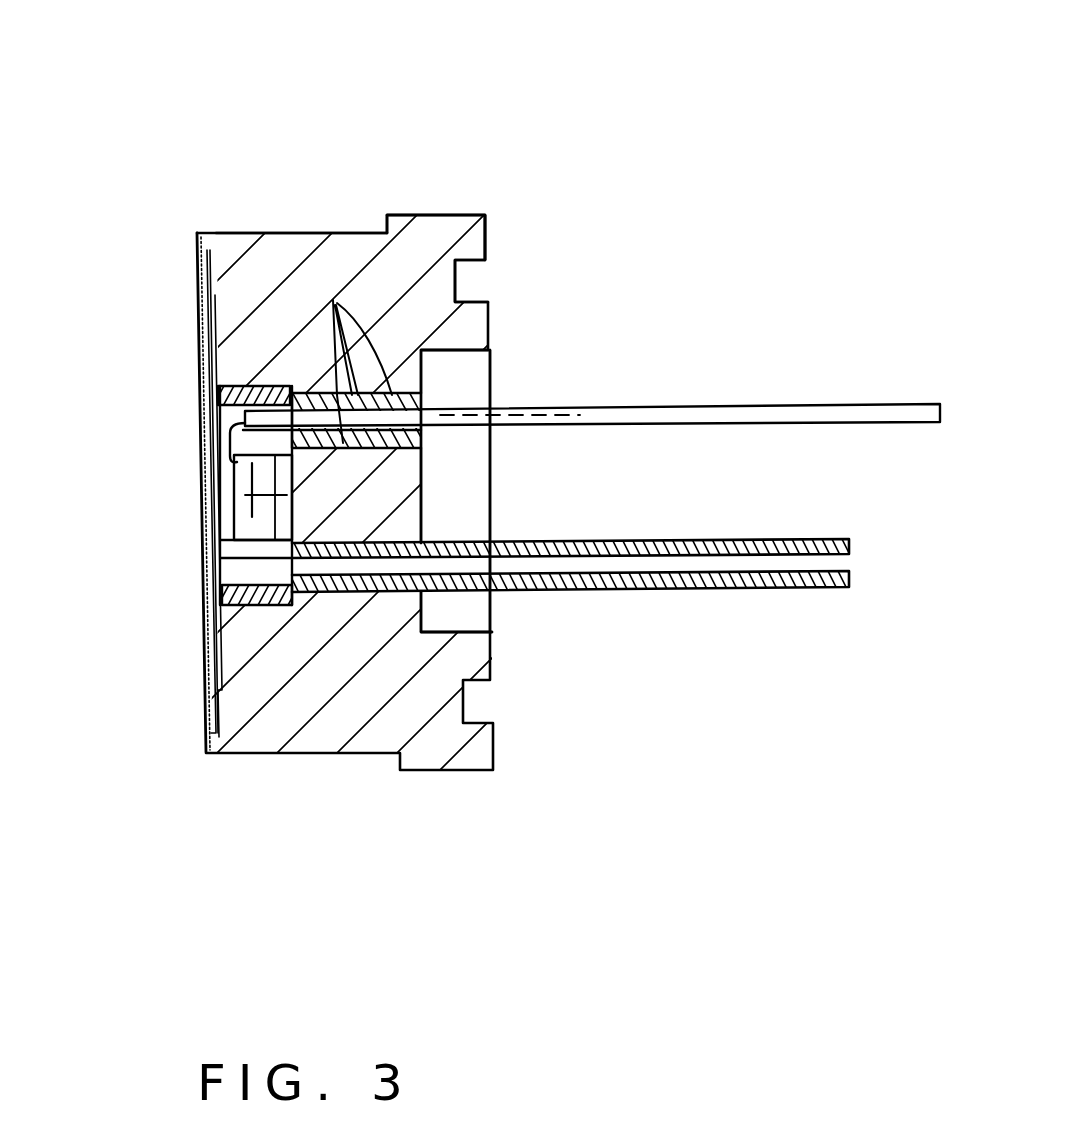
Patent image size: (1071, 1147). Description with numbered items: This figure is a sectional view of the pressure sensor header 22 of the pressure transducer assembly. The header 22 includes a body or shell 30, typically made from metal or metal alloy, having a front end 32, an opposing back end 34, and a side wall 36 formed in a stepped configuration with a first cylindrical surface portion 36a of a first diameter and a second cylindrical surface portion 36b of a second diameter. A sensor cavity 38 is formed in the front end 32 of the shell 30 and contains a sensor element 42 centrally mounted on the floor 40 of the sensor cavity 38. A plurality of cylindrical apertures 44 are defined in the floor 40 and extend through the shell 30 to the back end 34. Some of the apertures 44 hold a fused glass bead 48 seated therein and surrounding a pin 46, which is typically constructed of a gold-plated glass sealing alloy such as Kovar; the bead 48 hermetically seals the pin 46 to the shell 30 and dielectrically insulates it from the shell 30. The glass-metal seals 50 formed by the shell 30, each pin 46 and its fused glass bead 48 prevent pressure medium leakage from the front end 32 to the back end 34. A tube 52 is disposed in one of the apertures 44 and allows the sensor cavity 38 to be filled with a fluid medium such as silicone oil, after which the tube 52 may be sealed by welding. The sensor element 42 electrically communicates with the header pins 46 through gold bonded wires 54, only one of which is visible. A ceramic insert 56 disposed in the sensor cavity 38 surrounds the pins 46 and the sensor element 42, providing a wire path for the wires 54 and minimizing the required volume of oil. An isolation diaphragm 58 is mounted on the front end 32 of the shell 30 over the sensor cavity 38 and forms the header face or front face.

The pressure sensor header 22 is at (257, 67).
The shell 30 is at (334, 722).
The front end 32 is at (172, 319).
The back end 34 is at (521, 514).
The side wall 36 is at (389, 203).
The first cylindrical surface portion 36a is at (322, 227).
The second cylindrical surface portion 36b is at (442, 210).
The sensor cavity 38 is at (292, 518).
The floor 40 is at (218, 541).
The sensor element 42 is at (255, 482).
The cylindrical apertures 44 is at (427, 400).
The pin 46 is at (808, 412).
The fused glass bead 48 is at (407, 430).
The glass-metal seal 50 is at (333, 300).
The tube 52 is at (828, 590).
The gold bonded wire 54 is at (224, 425).
The ceramic insert 56 is at (215, 598).
The isolation diaphragm 58 is at (205, 702).